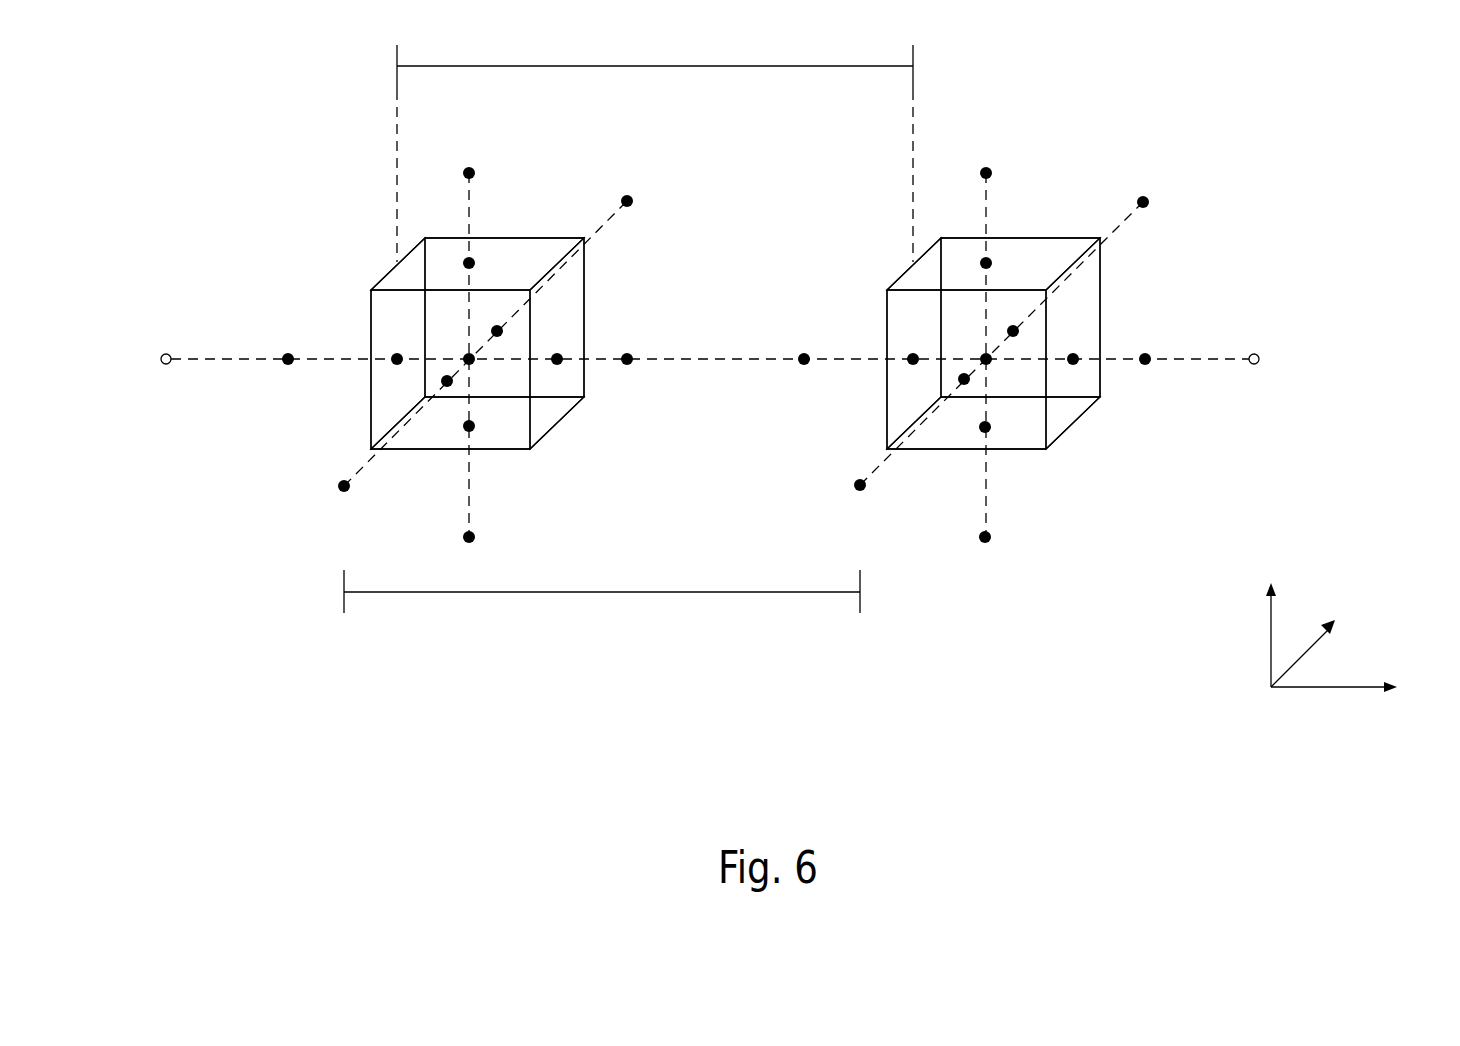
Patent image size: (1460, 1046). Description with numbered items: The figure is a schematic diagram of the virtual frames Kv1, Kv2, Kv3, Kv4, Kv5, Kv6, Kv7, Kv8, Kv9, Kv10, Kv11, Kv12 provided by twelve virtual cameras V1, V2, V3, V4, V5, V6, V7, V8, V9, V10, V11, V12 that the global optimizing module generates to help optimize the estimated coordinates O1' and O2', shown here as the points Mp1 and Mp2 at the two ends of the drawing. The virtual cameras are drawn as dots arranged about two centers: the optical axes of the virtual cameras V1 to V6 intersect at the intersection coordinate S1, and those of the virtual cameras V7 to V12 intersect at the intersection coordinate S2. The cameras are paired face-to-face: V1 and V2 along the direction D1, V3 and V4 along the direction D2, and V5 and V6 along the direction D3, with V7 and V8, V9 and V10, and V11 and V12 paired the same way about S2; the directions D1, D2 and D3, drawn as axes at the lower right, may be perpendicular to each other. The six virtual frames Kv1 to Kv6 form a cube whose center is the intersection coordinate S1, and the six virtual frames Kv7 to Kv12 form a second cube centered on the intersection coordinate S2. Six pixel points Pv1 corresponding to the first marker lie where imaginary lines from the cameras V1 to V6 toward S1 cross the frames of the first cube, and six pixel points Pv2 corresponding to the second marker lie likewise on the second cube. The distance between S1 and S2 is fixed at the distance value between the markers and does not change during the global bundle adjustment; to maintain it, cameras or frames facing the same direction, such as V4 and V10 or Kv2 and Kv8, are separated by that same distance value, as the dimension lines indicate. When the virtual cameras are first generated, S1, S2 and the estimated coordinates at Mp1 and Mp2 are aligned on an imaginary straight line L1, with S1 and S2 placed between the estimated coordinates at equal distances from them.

The imaginary straight line L1 is at (221, 360).
The measurement point (O1') Mp1 is at (1268, 341).
The measurement point (O2') Mp2 is at (155, 340).
The intersection coordinate S1 is at (973, 343).
The intersection coordinate S2 is at (456, 343).
The pixel points Pv1 is at (996, 347).
The pixel points Pv2 is at (478, 346).
The virtual frame Kv1 is at (1088, 379).
The virtual frame Kv2 is at (895, 302).
The virtual frame Kv3 is at (1092, 273).
The virtual frame Kv4 is at (947, 437).
The virtual frame Kv5 is at (1038, 245).
The virtual frame Kv6 is at (1027, 445).
The virtual frame Kv7 is at (573, 380).
The virtual frame Kv8 is at (379, 301).
The virtual frame Kv9 is at (576, 273).
The virtual frame Kv10 is at (431, 437).
The virtual frame Kv11 is at (523, 245).
The virtual frame Kv12 is at (508, 445).
The virtual camera V1 is at (1142, 341).
The virtual camera V2 is at (804, 343).
The virtual camera V3 is at (1164, 194).
The virtual camera V4 is at (840, 499).
The virtual camera V5 is at (984, 156).
The virtual camera V6 is at (984, 554).
The virtual camera V7 is at (629, 343).
The virtual camera V8 is at (285, 344).
The virtual camera V9 is at (647, 201).
The virtual camera V10 is at (315, 494).
The virtual camera V11 is at (466, 156).
The virtual camera V12 is at (465, 556).
The direction D1 is at (1356, 688).
The direction D2 is at (1325, 643).
The direction D3 is at (1270, 616).